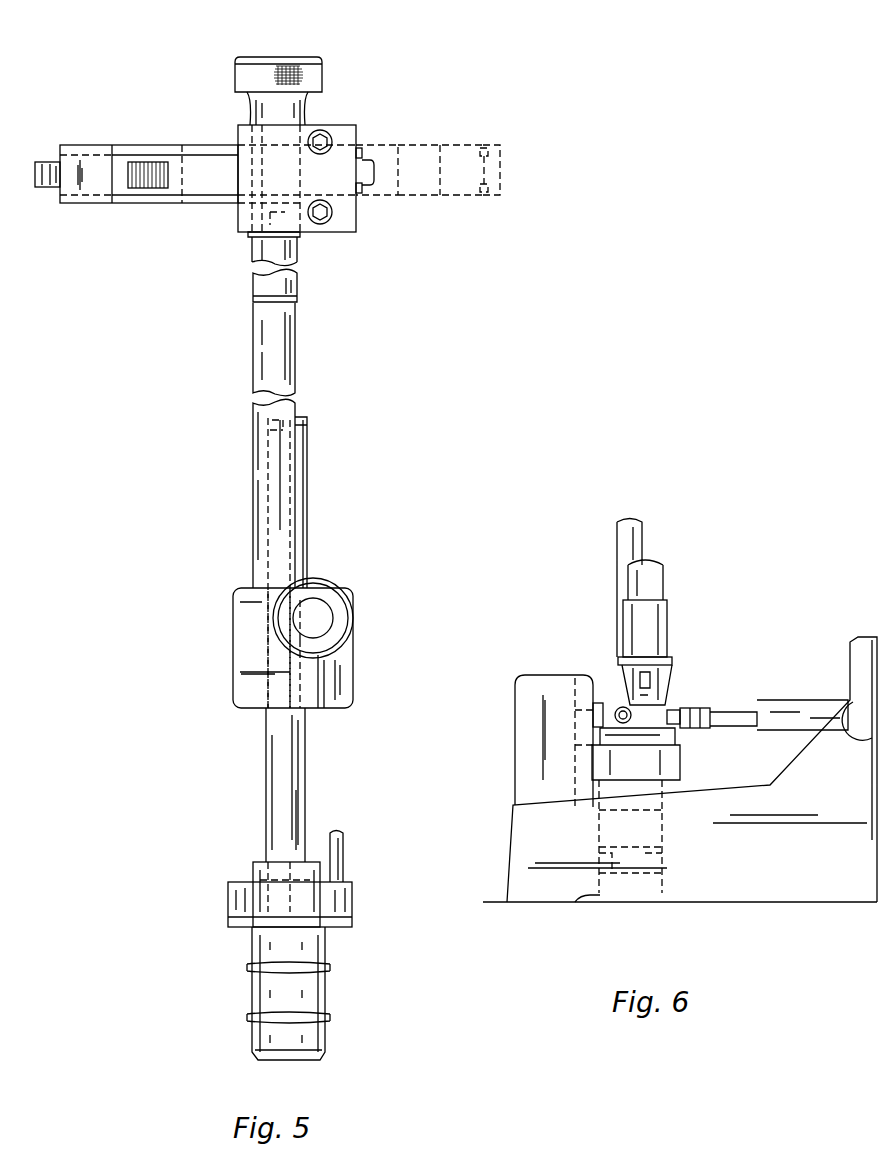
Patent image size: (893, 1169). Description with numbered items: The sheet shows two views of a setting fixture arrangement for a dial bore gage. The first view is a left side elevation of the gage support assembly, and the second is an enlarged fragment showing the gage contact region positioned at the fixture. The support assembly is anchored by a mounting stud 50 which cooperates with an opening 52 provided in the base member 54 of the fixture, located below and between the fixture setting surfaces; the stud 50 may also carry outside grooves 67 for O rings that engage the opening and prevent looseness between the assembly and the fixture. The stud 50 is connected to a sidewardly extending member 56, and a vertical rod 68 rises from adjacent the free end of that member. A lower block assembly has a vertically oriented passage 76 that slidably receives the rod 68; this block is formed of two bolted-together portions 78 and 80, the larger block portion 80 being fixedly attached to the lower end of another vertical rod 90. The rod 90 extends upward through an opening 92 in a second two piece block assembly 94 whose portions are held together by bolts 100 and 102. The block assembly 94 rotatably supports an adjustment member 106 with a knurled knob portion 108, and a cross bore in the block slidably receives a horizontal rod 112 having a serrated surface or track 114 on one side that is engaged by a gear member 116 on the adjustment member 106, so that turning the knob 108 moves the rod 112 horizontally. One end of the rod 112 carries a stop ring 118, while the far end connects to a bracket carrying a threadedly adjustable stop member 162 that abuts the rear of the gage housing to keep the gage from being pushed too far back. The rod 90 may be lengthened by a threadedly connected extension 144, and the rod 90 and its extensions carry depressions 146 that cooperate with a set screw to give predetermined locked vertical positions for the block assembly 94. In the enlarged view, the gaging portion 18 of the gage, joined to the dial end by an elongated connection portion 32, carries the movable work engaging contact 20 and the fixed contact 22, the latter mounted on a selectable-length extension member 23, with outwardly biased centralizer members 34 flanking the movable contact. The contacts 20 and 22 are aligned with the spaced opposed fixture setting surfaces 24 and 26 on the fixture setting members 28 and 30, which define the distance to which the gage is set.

In FIG. 6, the gaging portion 18 is at (692, 653).
In FIG. 6, the work engaging contact 20 is at (621, 707).
In FIG. 6, the work engaging contact 22 is at (700, 718).
In FIG. 6, the extension member 23 is at (676, 712).
In FIG. 6, the fixture setting surface 24 is at (615, 705).
In FIG. 6, the fixture setting surface 26 is at (728, 728).
In FIG. 6, the fixture setting member 28 is at (597, 717).
In FIG. 6, the fixture setting member 30 is at (770, 722).
In FIG. 6, the elongated connection portion 32 is at (655, 585).
In FIG. 6, the centralizer members 34 is at (626, 748).
In FIG. 5, the mounting stud 50 is at (285, 995).
In FIG. 6, the mounting stud 50 is at (640, 900).
In FIG. 6, the opening 52 is at (604, 900).
In FIG. 6, the base member 54 is at (778, 868).
In FIG. 5, the sidewardly extending member 56 is at (338, 906).
In FIG. 5, the ribs 67 is at (247, 1017).
In FIG. 5, the vertical rod 68 is at (285, 785).
In FIG. 5, the passage 76 is at (262, 738).
In FIG. 5, the block portion 78 is at (344, 683).
In FIG. 5, the block portion 80 is at (242, 683).
In FIG. 5, the vertical rod 90 is at (268, 358).
In FIG. 5, the opening 92 is at (242, 238).
In FIG. 5, the block assembly 94 is at (371, 129).
In FIG. 5, the bolt 100 is at (327, 138).
In FIG. 5, the bolt 102 is at (323, 222).
In FIG. 5, the adjustment member 106 is at (270, 282).
In FIG. 5, the knurled knob portion 108 is at (268, 60).
In FIG. 5, the horizontal rod 112 is at (131, 168).
In FIG. 5, the serrated surface or track 114 is at (168, 176).
In FIG. 5, the gear member 116 is at (312, 132).
In FIG. 5, the stop ring 118 is at (497, 148).
In FIG. 5, the extension 144 is at (300, 290).
In FIG. 5, the depressions 146 is at (298, 354).
In FIG. 5, the stop member 162 is at (38, 172).